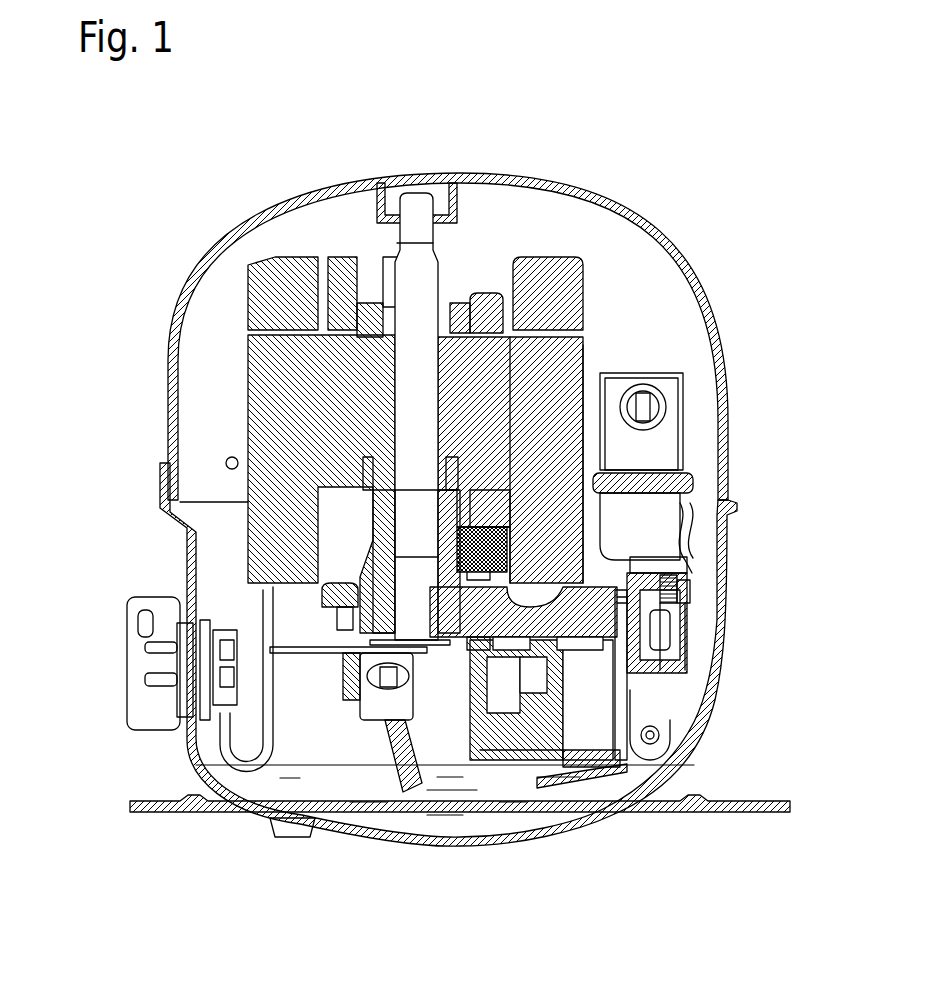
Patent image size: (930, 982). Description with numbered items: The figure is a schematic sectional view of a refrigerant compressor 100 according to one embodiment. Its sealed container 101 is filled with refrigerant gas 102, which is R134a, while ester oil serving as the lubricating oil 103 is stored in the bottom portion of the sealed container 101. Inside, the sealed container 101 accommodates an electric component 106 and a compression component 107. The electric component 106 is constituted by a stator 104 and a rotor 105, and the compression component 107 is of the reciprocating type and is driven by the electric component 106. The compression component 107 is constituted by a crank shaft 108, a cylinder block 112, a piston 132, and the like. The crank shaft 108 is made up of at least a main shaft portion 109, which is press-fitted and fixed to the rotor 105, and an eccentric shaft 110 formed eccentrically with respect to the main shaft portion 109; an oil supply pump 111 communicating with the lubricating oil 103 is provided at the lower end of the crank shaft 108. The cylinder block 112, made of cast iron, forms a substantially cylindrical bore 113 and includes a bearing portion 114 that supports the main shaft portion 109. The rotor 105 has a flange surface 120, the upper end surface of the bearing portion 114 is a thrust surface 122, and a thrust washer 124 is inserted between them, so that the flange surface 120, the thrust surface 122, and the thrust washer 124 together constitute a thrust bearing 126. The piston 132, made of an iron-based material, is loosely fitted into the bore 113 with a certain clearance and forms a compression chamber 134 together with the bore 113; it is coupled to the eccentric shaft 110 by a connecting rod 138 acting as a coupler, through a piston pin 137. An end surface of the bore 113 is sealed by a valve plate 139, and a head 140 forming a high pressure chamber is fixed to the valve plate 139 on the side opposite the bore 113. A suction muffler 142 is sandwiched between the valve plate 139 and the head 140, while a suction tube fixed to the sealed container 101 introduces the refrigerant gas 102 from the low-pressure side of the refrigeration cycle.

The refrigerant compressor 100 is at (313, 187).
The sealed container 101 is at (677, 252).
The refrigerant gas 102 is at (610, 265).
The lubricating oil 103 is at (435, 803).
The stator 104 is at (262, 364).
The rotor 105 is at (347, 363).
The electric component 106 is at (540, 285).
The compression component 107 is at (567, 773).
The crank shaft 108 is at (413, 340).
The main shaft portion 109 is at (403, 600).
The eccentric shaft 110 is at (350, 666).
The oil supply pump 111 is at (397, 740).
The cylinder block 112 is at (517, 745).
The bore 113 is at (670, 813).
The bearing portion 114 is at (387, 593).
The flange surface 120 is at (400, 545).
The thrust surface 122 is at (372, 458).
The thrust washer 124 is at (365, 455).
The thrust bearing 126 is at (590, 360).
The piston 132 is at (535, 703).
The compression chamber 134 is at (665, 725).
The piston pin 137 is at (498, 700).
The connecting rod 138 is at (355, 672).
The valve plate 139 is at (627, 677).
The head 140 is at (663, 703).
The suction muffler 142 is at (663, 440).